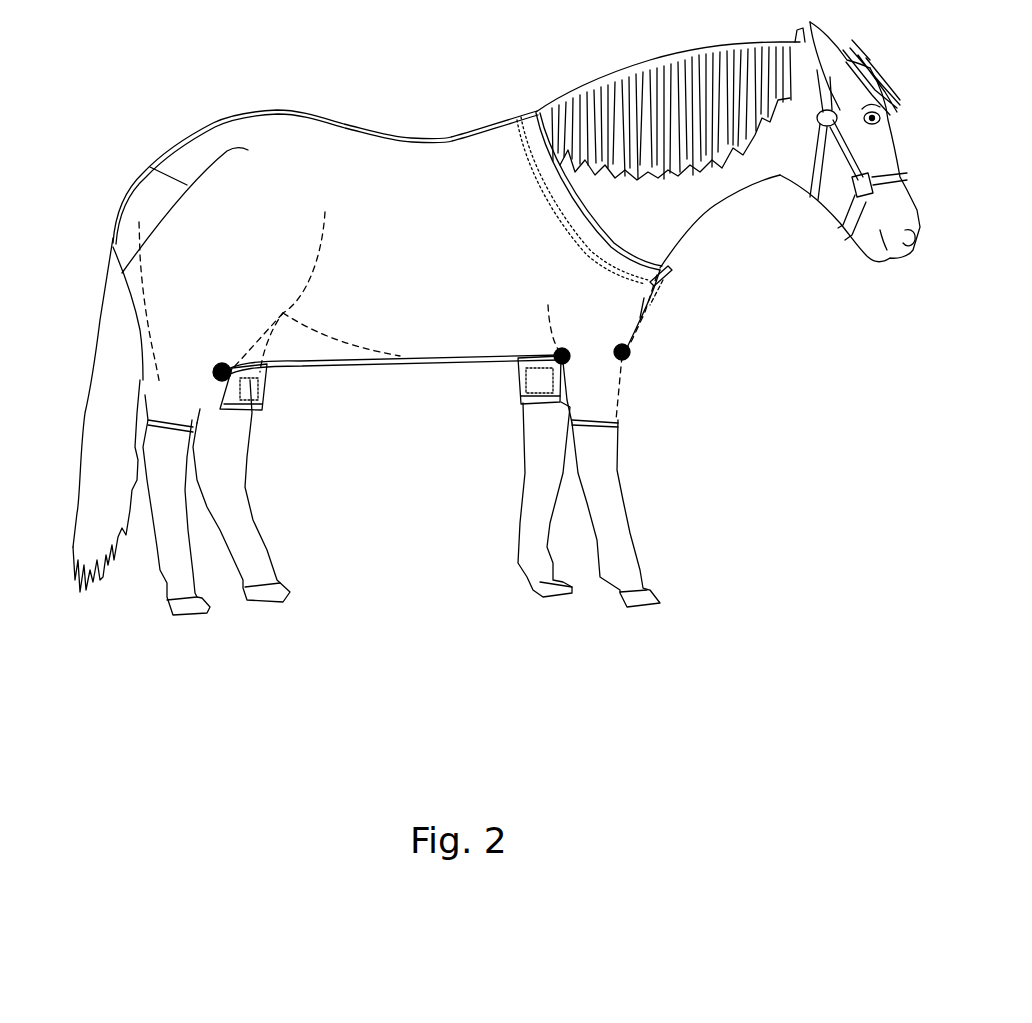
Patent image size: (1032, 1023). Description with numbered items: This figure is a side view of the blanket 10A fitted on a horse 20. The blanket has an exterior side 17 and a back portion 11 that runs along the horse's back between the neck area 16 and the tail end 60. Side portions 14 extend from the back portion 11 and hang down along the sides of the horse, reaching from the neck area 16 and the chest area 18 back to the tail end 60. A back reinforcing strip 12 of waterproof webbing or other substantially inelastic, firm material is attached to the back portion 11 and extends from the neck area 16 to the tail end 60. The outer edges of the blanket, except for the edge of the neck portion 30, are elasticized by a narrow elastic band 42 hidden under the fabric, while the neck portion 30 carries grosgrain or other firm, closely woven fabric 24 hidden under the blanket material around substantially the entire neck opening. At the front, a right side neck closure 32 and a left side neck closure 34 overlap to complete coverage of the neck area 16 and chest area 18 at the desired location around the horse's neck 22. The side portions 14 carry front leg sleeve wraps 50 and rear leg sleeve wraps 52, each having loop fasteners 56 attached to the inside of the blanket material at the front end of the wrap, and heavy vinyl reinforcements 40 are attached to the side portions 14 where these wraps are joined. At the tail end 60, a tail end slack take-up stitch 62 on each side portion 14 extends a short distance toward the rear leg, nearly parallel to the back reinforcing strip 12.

The blanket 10A is at (292, 112).
The back portion 11 is at (372, 169).
The back reinforcing strip 12 is at (382, 128).
The side portions 14 is at (412, 244).
The neck area 16 is at (563, 242).
The exterior side 17 is at (461, 315).
The chest area 18 is at (638, 300).
The horse 20 is at (655, 62).
The horse's neck 22 is at (698, 213).
The grosgrain fabric 24 is at (591, 245).
The neck portion 30 is at (600, 227).
The right side neck closure 32 is at (670, 271).
The left side neck closure 34 is at (663, 290).
The heavy vinyl reinforcements 40 is at (632, 350).
The narrow elastic band 42 is at (347, 365).
The front leg sleeve wraps 50 is at (597, 393).
The rear leg sleeve wraps 52 is at (187, 405).
The loop fasteners 56 is at (247, 397).
The tail end 60 is at (112, 226).
The tail end slack take-up stitch 62 is at (150, 167).